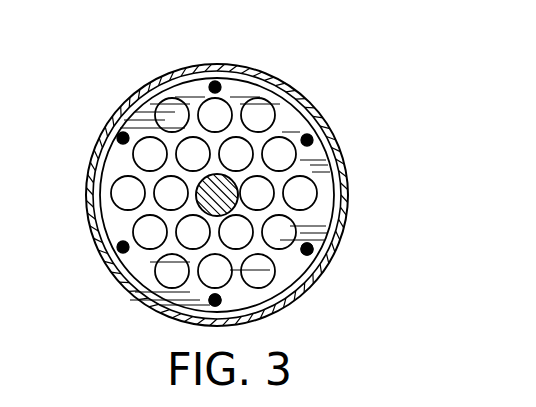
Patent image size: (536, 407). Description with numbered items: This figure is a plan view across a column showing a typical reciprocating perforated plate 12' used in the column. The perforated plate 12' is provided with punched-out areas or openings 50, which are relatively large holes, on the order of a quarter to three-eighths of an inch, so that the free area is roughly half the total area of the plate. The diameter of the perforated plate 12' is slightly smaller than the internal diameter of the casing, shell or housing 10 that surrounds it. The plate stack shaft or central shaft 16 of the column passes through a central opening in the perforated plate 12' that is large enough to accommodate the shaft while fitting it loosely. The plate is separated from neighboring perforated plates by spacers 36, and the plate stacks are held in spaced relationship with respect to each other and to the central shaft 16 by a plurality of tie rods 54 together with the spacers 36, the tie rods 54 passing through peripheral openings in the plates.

The housing 10 is at (93, 240).
The reciprocating perforated plate 12' is at (209, 195).
The central shaft 16 is at (238, 174).
The spacers 36 is at (129, 132).
The openings 50 is at (309, 137).
The tie rods 54 is at (314, 248).